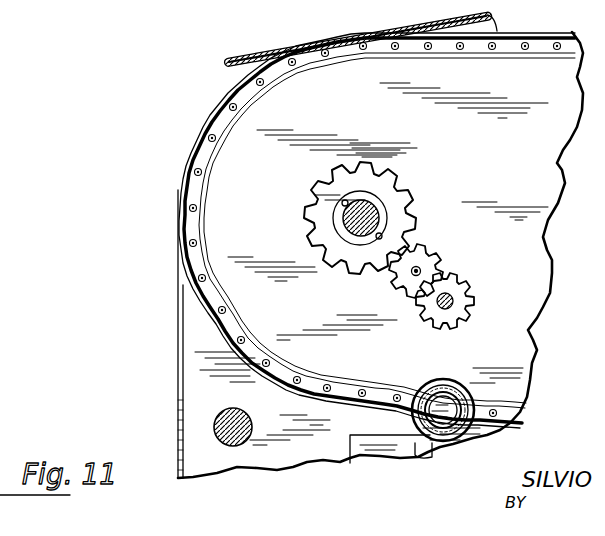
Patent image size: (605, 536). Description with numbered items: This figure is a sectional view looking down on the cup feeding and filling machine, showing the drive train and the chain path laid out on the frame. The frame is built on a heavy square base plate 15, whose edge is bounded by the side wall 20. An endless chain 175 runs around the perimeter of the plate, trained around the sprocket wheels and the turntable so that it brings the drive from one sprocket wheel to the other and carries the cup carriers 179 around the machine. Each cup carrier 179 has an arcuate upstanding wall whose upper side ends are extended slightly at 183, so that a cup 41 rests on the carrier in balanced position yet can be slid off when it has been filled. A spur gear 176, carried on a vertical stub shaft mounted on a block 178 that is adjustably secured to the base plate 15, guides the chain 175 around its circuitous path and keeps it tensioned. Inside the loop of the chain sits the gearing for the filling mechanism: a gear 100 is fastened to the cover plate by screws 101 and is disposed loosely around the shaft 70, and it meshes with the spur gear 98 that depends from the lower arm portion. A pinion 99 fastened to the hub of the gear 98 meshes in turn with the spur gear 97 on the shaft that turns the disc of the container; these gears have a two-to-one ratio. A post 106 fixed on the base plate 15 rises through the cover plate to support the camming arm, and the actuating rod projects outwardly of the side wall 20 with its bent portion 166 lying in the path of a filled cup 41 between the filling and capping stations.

The base plate 15 is at (312, 458).
The side wall 20 is at (178, 252).
The cup 41 is at (412, 416).
The shaft 70 is at (350, 219).
The spur gear 97 is at (437, 330).
The spur gear 98 is at (408, 279).
The pinion 99 is at (442, 265).
The gear 100 is at (400, 185).
The screws 101 is at (385, 236).
The post 106 is at (245, 415).
The bent portion 166 is at (250, 58).
The endless chain 175 is at (540, 42).
The spur gear 176 is at (433, 456).
The block 178 is at (360, 455).
The cup carrier 179 is at (455, 386).
The wall extensions 183 is at (431, 387).